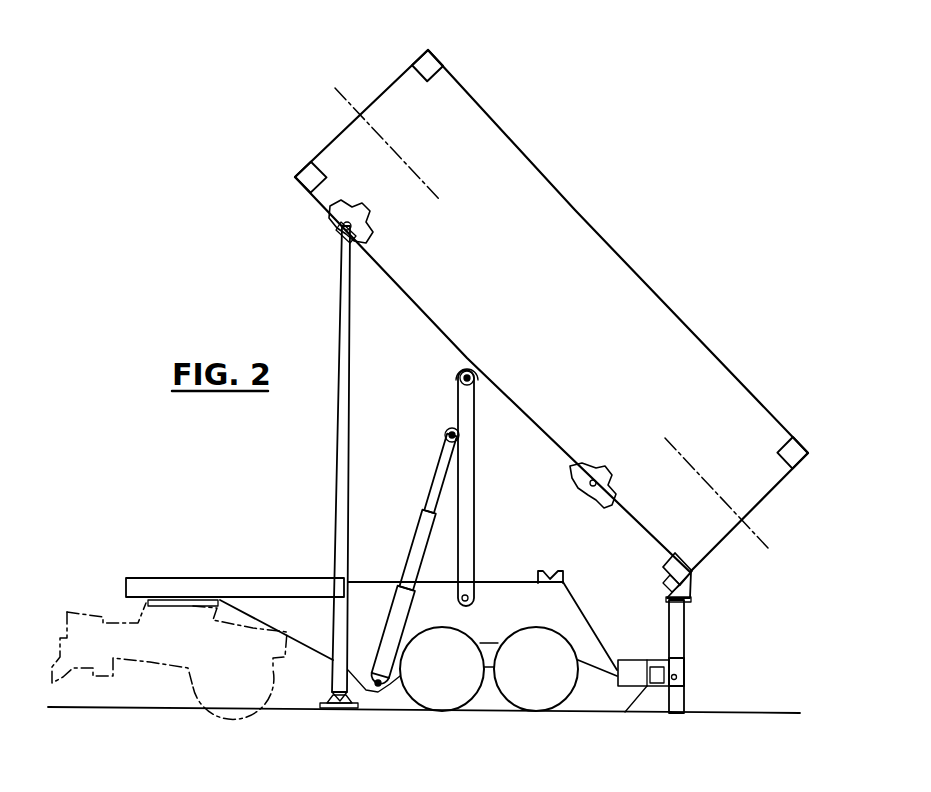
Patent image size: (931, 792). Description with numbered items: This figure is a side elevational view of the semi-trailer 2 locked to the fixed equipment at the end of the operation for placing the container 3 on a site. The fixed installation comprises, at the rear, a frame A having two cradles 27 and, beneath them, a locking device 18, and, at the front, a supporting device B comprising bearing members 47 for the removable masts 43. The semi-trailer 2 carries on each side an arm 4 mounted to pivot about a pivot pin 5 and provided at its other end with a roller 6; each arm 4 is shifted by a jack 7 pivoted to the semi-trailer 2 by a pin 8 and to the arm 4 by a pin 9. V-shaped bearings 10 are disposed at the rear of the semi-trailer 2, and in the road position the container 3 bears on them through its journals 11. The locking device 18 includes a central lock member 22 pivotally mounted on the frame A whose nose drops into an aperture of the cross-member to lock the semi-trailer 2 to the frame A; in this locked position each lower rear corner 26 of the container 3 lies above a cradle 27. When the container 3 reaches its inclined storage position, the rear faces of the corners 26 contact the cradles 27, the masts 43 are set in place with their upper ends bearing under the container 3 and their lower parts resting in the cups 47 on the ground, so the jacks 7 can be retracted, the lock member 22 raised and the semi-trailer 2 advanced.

The semi-trailer 2 is at (182, 593).
The container 3 is at (586, 237).
The arm 4 is at (470, 486).
The pivot pin 5 is at (470, 601).
The roller 6 is at (456, 381).
The jack 7 is at (421, 556).
The pin 8 is at (371, 679).
The pin 9 is at (449, 430).
The V-shaped bearing 10 is at (565, 578).
The journal 11 is at (591, 490).
The locking device 18 is at (690, 670).
The central lock member 22 is at (641, 659).
The lower rear corner 26 is at (675, 556).
The cradle 27 is at (693, 588).
The removable mast 43 is at (349, 447).
The bearing member 47 is at (355, 708).
The frame A is at (692, 649).
The supporting device B is at (332, 539).